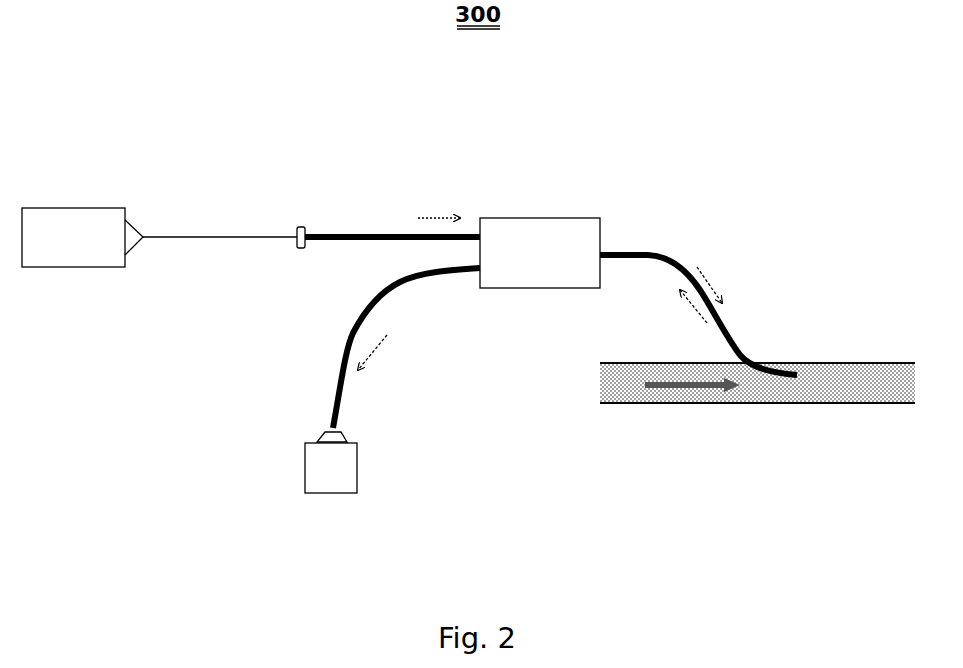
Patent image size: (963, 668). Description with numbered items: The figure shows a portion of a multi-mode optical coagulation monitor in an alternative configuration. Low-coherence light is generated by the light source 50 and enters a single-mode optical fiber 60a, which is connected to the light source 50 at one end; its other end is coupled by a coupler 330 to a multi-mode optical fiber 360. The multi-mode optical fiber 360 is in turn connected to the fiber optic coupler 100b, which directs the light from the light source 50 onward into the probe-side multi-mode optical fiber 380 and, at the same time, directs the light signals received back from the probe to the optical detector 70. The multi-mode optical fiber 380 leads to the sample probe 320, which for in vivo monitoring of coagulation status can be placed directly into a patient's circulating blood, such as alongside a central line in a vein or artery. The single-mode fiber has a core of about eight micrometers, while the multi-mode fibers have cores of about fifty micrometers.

The light source 50 is at (77, 248).
The single-mode optical fiber 60a is at (170, 237).
The coupler 330 is at (297, 246).
The multi-mode optical fiber 360 is at (345, 231).
The fiber optic coupler 100b is at (557, 230).
The multi-mode optical fiber 380 is at (657, 250).
The sample probe 320 is at (787, 362).
The optical detector 70 is at (323, 460).